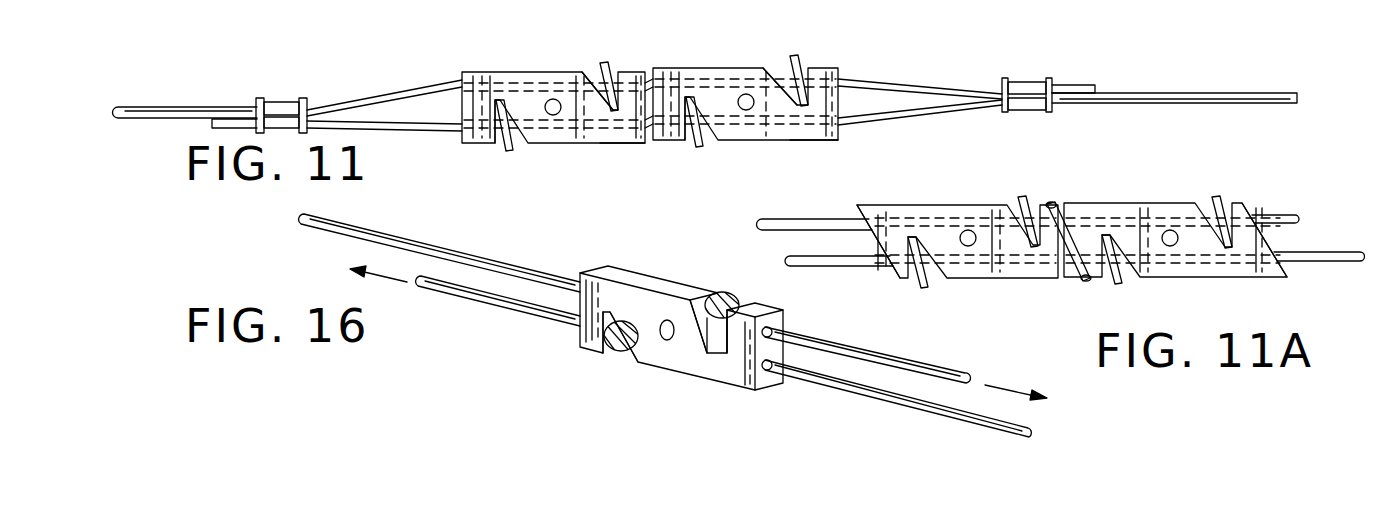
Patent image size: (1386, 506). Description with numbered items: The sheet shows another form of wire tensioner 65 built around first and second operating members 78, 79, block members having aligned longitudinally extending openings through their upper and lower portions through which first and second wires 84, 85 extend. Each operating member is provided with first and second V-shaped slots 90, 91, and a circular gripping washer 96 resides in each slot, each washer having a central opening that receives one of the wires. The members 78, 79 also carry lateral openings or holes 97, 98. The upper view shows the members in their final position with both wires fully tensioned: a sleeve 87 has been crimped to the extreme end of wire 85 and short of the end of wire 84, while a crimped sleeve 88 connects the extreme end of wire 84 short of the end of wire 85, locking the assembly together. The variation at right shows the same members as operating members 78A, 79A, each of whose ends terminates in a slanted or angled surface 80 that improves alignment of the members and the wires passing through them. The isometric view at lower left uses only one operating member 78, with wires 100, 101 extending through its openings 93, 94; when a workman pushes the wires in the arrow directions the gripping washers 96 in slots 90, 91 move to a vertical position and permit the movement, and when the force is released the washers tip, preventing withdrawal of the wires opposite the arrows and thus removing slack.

In FIG. 11, the splice assembly 65 is at (577, 6).
In FIG. 11, the first operating member 78 is at (725, 68).
In FIG. 16, the first operating member 78 is at (580, 322).
In FIG. 11A, the operating member 78A is at (1127, 203).
In FIG. 11, the second operating member 79 is at (483, 72).
In FIG. 11A, the operating member 79A is at (897, 205).
In FIG. 11A, the slanted or angled surface 80 is at (1063, 206).
In FIG. 11, the first wire 84 is at (884, 114).
In FIG. 11A, the first wire 84 is at (1322, 260).
In FIG. 11, the second wire 85 is at (402, 91).
In FIG. 11A, the second wire 85 is at (795, 222).
In FIG. 11, the sleeve 87 is at (1022, 85).
In FIG. 11, the crimped sleeve 88 is at (275, 100).
In FIG. 11, the first V-shaped slot 90 is at (517, 140).
In FIG. 16, the first V-shaped slot 90 is at (613, 355).
In FIG. 11, the second V-shaped slot 91 is at (592, 75).
In FIG. 16, the second V-shaped slot 91 is at (703, 310).
In FIG. 11, the opening 93 is at (598, 133).
In FIG. 11, the opening 94 is at (513, 78).
In FIG. 11, the gripping washer 96 is at (505, 146).
In FIG. 11A, the gripping washer 96 is at (1025, 197).
In FIG. 16, the gripping washer 96 is at (735, 295).
In FIG. 11, the lateral opening or hole 97 is at (747, 110).
In FIG. 11A, the lateral opening or hole 97 is at (1173, 247).
In FIG. 11, the lateral opening or hole 98 is at (555, 114).
In FIG. 11A, the lateral opening or hole 98 is at (970, 247).
In FIG. 16, the wire 100 is at (827, 380).
In FIG. 16, the wire 101 is at (355, 232).